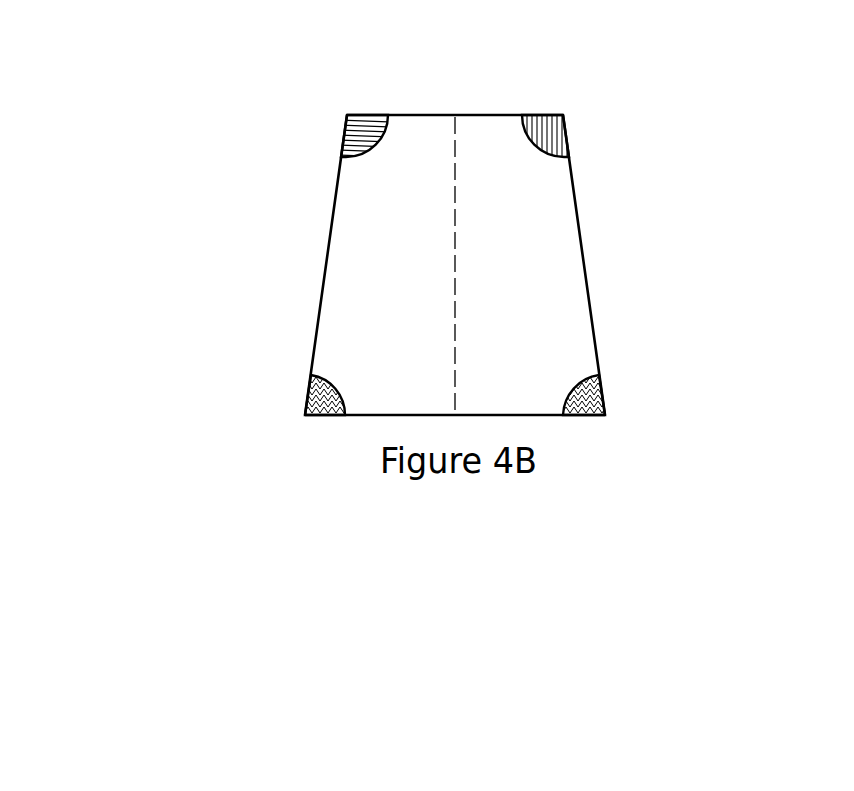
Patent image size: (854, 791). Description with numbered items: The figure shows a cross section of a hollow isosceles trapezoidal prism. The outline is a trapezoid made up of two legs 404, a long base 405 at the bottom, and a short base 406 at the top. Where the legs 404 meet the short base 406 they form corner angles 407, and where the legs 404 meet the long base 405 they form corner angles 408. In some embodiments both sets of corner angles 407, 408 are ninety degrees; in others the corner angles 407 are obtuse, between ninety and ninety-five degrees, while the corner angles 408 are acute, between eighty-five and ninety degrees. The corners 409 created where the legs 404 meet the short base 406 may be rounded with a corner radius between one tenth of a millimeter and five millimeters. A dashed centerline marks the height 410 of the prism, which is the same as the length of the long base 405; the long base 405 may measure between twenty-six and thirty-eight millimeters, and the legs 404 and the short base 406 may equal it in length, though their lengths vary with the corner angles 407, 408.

The legs 404 is at (322, 253).
The long base 405 is at (525, 415).
The short base 406 is at (432, 113).
The corner angles 407 is at (550, 128).
The corner angles 408 is at (307, 390).
The corners 409 is at (347, 115).
The height 410 is at (455, 255).